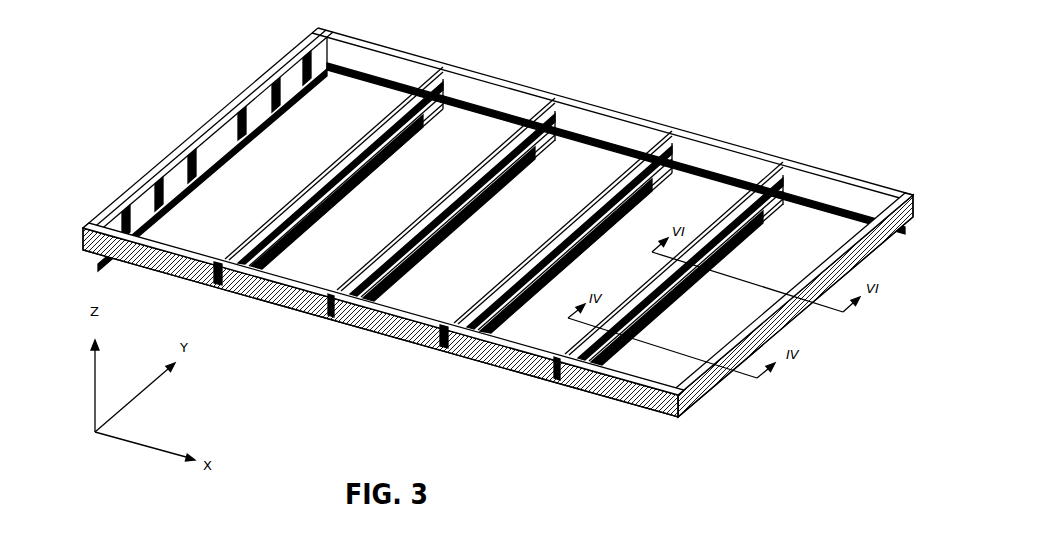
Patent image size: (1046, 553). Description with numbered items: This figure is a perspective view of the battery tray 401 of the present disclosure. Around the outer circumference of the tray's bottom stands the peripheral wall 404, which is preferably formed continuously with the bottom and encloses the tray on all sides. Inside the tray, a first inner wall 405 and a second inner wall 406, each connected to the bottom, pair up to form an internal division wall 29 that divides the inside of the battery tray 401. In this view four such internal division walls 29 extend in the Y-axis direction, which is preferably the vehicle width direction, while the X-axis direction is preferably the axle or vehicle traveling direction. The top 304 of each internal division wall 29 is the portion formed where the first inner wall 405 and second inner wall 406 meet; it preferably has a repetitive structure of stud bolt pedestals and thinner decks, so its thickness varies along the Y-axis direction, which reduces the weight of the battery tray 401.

The battery tray 401 is at (499, 249).
The top of the internal division wall 304 is at (553, 100).
The second inner wall 406 is at (729, 168).
The first inner wall 405 is at (785, 176).
The internal division wall 29 is at (740, 240).
The peripheral wall 404 is at (797, 316).